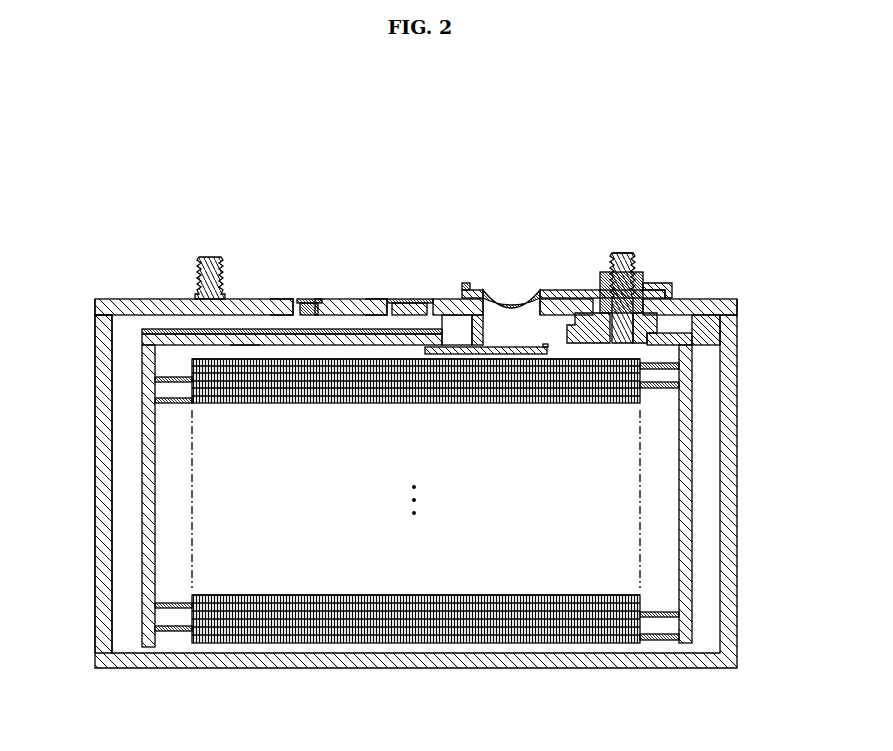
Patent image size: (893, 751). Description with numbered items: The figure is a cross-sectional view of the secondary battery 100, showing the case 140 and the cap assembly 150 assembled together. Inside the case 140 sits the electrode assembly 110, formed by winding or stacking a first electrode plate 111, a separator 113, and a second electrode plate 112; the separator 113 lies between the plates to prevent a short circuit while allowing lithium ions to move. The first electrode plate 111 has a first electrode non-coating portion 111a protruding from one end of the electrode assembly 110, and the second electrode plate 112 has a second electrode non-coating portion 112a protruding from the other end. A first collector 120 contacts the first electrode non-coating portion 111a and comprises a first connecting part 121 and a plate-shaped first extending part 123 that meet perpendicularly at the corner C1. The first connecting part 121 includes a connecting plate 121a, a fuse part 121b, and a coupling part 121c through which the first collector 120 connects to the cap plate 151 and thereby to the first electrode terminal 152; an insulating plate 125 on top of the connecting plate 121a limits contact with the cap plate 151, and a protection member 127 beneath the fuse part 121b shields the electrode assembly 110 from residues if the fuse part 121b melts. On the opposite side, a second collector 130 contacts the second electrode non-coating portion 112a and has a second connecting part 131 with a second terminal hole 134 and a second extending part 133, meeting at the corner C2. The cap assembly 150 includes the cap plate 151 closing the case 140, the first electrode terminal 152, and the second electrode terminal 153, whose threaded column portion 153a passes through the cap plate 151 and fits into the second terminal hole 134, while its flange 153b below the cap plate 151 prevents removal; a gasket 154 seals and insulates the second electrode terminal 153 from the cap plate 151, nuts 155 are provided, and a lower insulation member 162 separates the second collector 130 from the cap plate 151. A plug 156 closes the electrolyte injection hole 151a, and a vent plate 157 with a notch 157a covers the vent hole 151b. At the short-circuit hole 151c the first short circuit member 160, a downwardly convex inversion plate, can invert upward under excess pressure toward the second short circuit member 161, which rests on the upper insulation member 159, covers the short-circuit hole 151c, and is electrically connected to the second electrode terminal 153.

The secondary battery 100 is at (125, 181).
The electrode assembly 110 is at (418, 541).
The first electrode plate 111 is at (265, 632).
The first electrode non-coating portion 111a is at (173, 632).
The second electrode plate 112 is at (537, 645).
The second electrode non-coating portion 112a is at (660, 643).
The separator 113 is at (450, 645).
The first collector 120 is at (418, 431).
The first connecting part 121 is at (190, 352).
The connecting plate 121a is at (243, 343).
The fuse part 121b is at (452, 337).
The coupling part 121c is at (484, 328).
The first extending part 123 is at (150, 508).
The insulating plate 125 is at (172, 329).
The protection member 127 is at (540, 347).
The second collector 130 is at (697, 443).
The second connecting part 131 is at (700, 318).
The second extending part 133 is at (692, 521).
The second terminal hole 134 is at (636, 345).
The case 140 is at (95, 402).
The cap assembly 150 is at (318, 220).
The cap plate 151 is at (338, 299).
The electrolyte injection hole 151a is at (298, 299).
The vent hole 151b is at (383, 299).
The short-circuit hole 151c is at (523, 298).
The first electrode terminal 152 is at (209, 257).
The second electrode terminal 153 is at (622, 253).
The column portion 153a is at (634, 272).
The flange 153b is at (593, 313).
The gasket 154 is at (655, 288).
The nuts 155 is at (609, 272).
The plug 156 is at (309, 299).
The vent plate 157 is at (393, 303).
The notch 157a is at (413, 299).
The upper insulation member 159 is at (471, 283).
The first short circuit member 160 is at (533, 299).
The second short circuit member 161 is at (553, 297).
The lower insulation member 162 is at (716, 329).
The corner of the first collector C1 is at (95, 301).
The corner of the second collector C2 is at (737, 315).